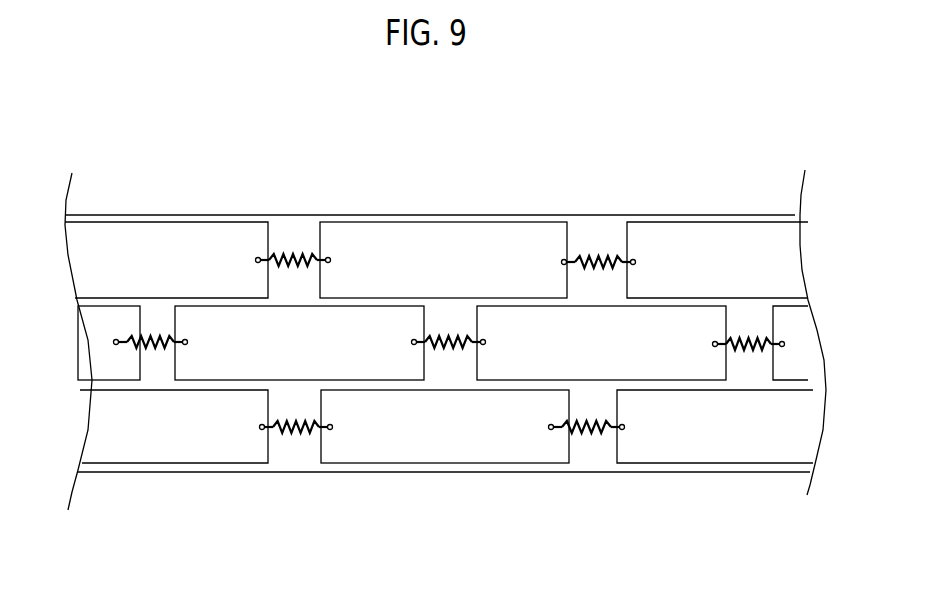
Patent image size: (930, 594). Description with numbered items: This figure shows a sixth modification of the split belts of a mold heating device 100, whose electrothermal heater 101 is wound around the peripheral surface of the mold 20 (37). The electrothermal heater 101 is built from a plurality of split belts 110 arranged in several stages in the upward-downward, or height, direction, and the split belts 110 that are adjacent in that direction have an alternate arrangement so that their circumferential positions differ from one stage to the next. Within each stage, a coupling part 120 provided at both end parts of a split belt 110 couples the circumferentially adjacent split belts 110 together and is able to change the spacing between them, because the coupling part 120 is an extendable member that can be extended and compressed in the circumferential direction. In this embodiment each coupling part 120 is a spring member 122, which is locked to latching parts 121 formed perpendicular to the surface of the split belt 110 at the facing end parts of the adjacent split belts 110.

The mold 20 is at (445, 328).
The touch sensing layer 37 is at (557, 215).
The mold heating device 100 is at (444, 528).
The electrothermal heater 101 is at (247, 500).
The split belt 110 is at (237, 302).
The coupling part 120 is at (449, 320).
The latching part 121 is at (412, 339).
The spring member 122 is at (455, 348).